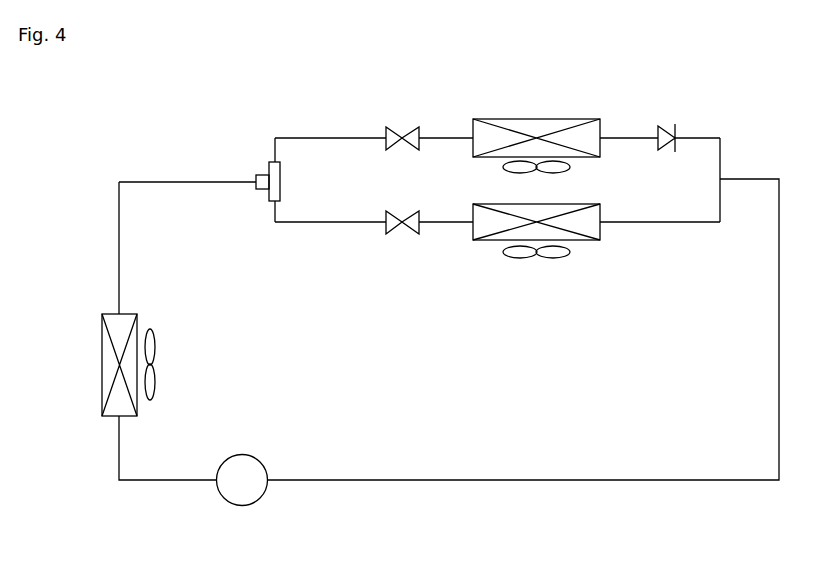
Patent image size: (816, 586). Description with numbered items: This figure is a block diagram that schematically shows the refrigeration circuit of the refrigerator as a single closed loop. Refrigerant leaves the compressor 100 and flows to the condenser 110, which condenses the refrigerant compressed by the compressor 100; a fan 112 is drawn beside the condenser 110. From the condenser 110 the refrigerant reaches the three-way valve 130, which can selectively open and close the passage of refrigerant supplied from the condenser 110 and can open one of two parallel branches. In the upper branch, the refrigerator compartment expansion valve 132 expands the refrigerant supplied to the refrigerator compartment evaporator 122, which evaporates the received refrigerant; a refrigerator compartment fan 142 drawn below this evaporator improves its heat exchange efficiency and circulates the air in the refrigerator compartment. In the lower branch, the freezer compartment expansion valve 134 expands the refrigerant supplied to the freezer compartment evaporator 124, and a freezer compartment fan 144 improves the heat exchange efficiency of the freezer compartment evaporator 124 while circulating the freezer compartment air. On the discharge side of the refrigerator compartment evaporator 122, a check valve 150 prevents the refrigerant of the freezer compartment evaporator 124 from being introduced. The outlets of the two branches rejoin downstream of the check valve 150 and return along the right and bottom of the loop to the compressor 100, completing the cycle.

The compressor 100 is at (255, 505).
The condenser 110 is at (101, 352).
The outdoor fan 112 is at (155, 364).
The refrigerator compartment evaporator 122 is at (535, 119).
The freezer compartment evaporator 124 is at (488, 241).
The 3-way valve 130 is at (254, 177).
The refrigerator compartment expansion valve 132 is at (389, 127).
The freezer compartment expansion valve 134 is at (396, 236).
The refrigerator compartment fan 142 is at (570, 168).
The freezer compartment fan 144 is at (555, 258).
The check valve 150 is at (665, 122).